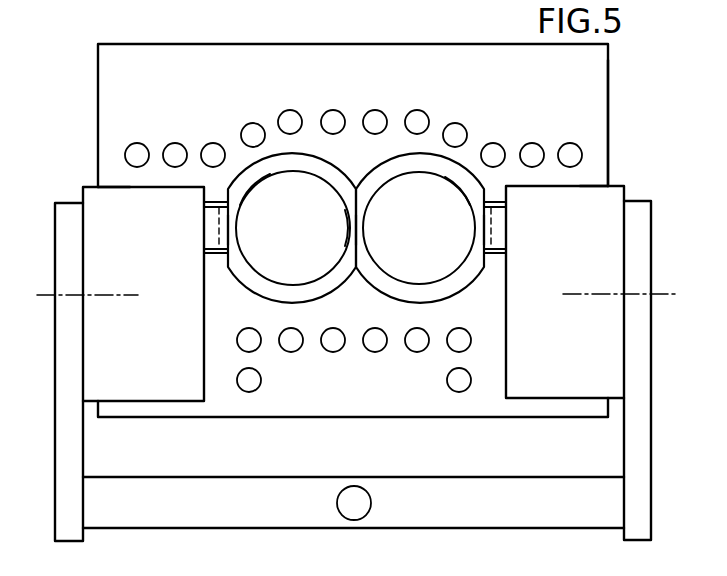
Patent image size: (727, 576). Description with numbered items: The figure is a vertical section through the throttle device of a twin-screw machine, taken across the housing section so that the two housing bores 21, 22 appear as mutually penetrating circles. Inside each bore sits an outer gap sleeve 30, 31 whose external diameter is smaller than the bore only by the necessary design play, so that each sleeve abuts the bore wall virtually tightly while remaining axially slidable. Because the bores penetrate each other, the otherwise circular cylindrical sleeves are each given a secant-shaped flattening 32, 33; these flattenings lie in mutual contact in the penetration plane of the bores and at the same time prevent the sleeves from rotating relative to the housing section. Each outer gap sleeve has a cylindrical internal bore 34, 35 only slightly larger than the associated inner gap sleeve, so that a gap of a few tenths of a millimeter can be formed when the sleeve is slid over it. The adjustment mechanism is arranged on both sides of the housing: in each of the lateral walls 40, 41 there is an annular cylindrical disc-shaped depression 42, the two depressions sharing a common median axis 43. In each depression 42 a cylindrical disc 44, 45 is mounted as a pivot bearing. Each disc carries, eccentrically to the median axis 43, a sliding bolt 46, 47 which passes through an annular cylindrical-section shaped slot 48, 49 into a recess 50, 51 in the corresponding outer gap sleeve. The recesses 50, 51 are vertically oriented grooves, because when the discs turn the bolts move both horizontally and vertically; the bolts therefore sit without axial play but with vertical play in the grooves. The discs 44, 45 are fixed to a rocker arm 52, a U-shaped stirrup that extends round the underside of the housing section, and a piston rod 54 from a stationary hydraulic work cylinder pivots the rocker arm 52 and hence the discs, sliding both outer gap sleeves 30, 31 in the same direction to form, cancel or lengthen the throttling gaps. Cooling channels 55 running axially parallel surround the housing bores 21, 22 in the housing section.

The housing bore 21 is at (304, 153).
The housing bore 22 is at (399, 153).
The outer gap sleeve 30 is at (322, 171).
The outer gap sleeve 31 is at (383, 171).
The secant-shaped flattening 32 is at (351, 242).
The secant-shaped flattening 33 is at (357, 234).
The cylindrical internal bore 34 is at (265, 182).
The cylindrical internal bore 35 is at (443, 177).
The lateral wall 40 is at (98, 85).
The lateral wall 41 is at (610, 82).
The depression 42 is at (118, 187).
The median axis 43 is at (45, 294).
The cylindrical disc 44 is at (102, 341).
The cylindrical disc 45 is at (610, 339).
The sliding bolt 46 is at (208, 226).
The sliding bolt 47 is at (498, 225).
The slot 48 is at (212, 255).
The slot 49 is at (494, 255).
The recess 50 is at (227, 238).
The recess 51 is at (484, 235).
The rocker arm 52 is at (431, 503).
The piston rod 54 is at (354, 508).
The cooling channels 55 is at (290, 120).